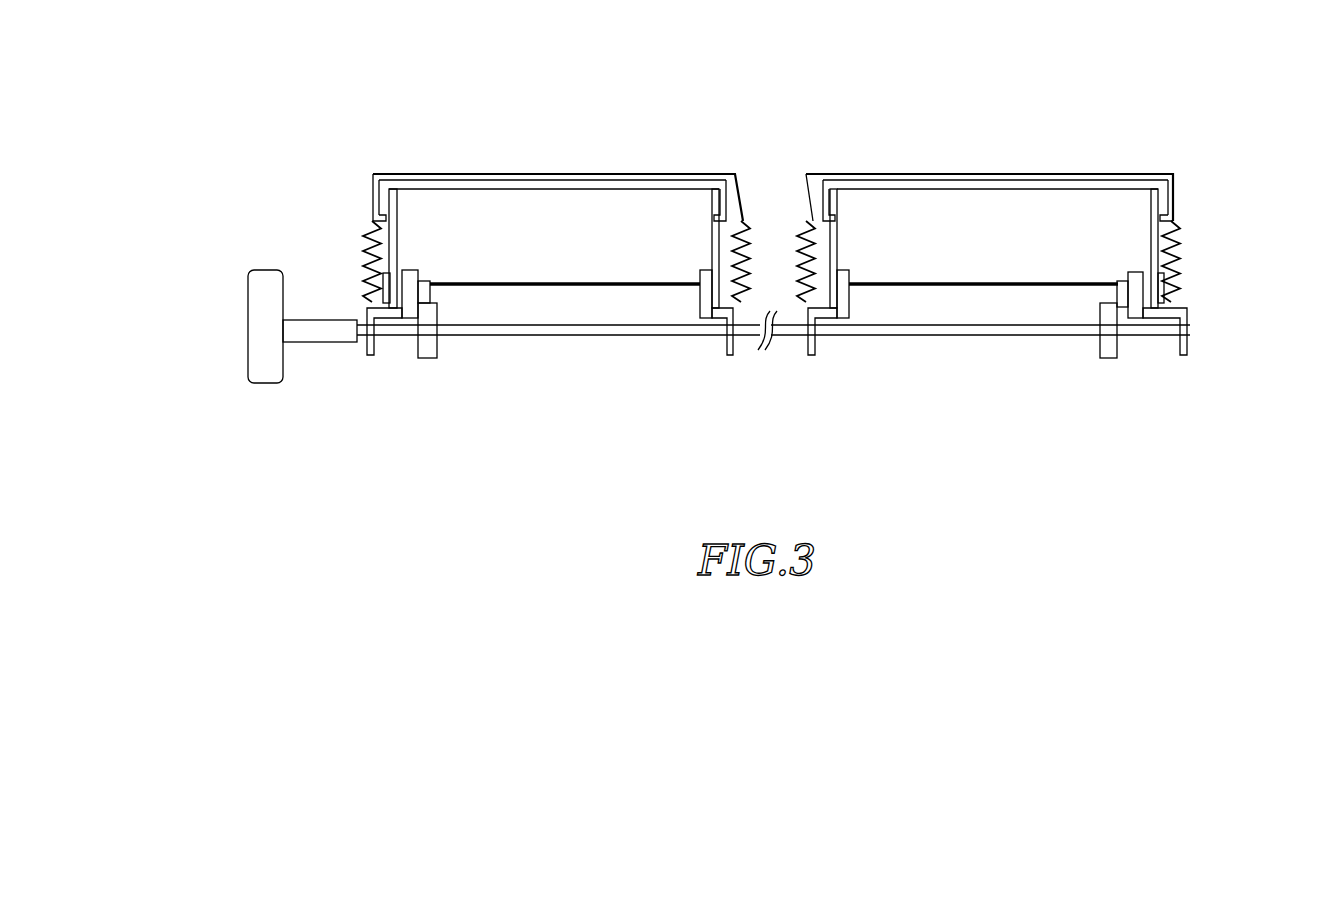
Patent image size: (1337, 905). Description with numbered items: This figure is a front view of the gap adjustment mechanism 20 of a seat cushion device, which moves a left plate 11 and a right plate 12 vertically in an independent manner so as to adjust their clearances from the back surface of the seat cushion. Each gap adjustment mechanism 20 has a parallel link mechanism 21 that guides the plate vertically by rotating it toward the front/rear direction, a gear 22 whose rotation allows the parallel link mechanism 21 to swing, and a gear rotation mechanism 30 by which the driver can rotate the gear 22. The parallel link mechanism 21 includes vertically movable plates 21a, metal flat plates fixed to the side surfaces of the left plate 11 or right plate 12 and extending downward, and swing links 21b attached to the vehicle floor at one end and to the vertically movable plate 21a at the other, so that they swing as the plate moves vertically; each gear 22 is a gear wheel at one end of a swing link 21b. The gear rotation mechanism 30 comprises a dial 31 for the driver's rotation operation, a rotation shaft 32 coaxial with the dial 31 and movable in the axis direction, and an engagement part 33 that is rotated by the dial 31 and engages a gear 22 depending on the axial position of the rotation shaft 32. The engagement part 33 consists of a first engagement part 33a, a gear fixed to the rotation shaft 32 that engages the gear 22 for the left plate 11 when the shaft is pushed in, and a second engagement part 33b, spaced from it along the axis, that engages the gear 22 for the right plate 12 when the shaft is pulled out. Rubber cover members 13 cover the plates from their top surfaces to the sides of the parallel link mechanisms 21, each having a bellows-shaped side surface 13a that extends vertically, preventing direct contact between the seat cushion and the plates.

The left plate 11 is at (1020, 187).
The right plate 12 is at (642, 180).
The cover member 13 is at (483, 173).
The side surface 13a is at (366, 258).
The gap adjustment mechanism 20 is at (386, 375).
The parallel link mechanism 21 is at (771, 166).
The vertically movable plate 21a is at (375, 178).
The swing link 21b is at (383, 218).
The gear 22 is at (423, 283).
The gear rotation mechanism 30 is at (290, 374).
The dial 31 is at (258, 365).
The rotation shaft 32 is at (515, 338).
The engagement part 33 is at (768, 371).
The first engagement part 33a is at (1107, 360).
The second engagement part 33b is at (433, 360).